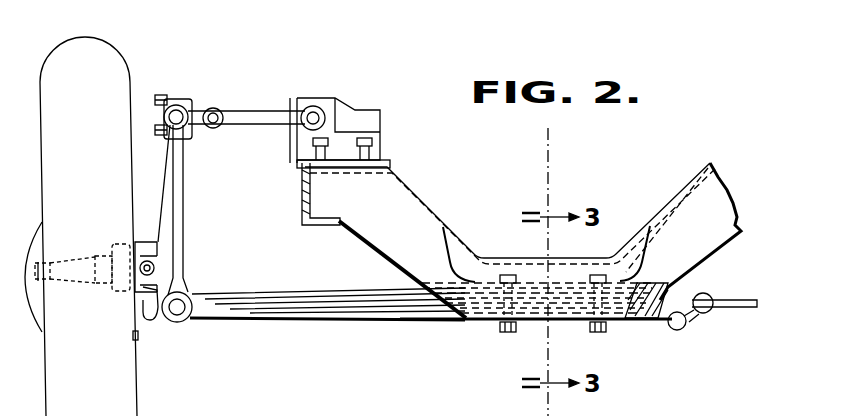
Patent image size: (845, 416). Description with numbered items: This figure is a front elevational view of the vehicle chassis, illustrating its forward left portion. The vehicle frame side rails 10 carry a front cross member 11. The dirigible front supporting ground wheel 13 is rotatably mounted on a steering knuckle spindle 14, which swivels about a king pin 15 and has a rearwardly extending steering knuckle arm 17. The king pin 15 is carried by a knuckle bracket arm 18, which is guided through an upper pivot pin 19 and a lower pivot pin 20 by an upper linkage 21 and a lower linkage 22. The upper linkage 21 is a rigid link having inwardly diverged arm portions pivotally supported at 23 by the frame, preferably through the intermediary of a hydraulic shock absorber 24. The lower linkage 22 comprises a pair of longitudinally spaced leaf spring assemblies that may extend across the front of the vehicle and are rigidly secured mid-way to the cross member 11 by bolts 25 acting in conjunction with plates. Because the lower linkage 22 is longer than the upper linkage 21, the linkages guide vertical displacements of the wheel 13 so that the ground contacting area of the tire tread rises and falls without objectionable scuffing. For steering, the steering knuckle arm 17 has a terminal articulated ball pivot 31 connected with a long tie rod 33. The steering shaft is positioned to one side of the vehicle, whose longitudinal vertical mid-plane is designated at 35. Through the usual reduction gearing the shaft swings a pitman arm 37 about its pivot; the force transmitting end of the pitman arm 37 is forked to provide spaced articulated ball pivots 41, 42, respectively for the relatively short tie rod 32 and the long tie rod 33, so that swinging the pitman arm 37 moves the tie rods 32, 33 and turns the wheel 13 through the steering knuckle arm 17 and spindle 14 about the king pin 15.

The vehicle frame side rails 10 is at (302, 222).
The front cross member 11 is at (412, 203).
The dirigible front supporting ground wheel 13 is at (82, 50).
The steering knuckle spindle 14 is at (78, 280).
The king pin 15 is at (140, 247).
The steering knuckle arm 17 is at (143, 297).
The knuckle bracket arm 18 is at (175, 218).
The upper pivot pin 19 is at (178, 98).
The lower pivot pin 20 is at (172, 325).
The upper linkage 21 is at (272, 90).
The lower linkage 22 is at (323, 273).
The pivotal support 23 is at (313, 108).
The hydraulic shock absorber 24 is at (338, 107).
The bolts 25 is at (500, 335).
The articulated ball pivot 31 is at (135, 338).
The short tie rod 32 is at (727, 307).
The long tie rod 33 is at (600, 333).
The longitudinal vertical mid-plane 35 is at (551, 155).
The pitman arm 37 is at (697, 325).
The articulated ball pivot 41 is at (702, 296).
The articulated ball pivot 42 is at (680, 330).